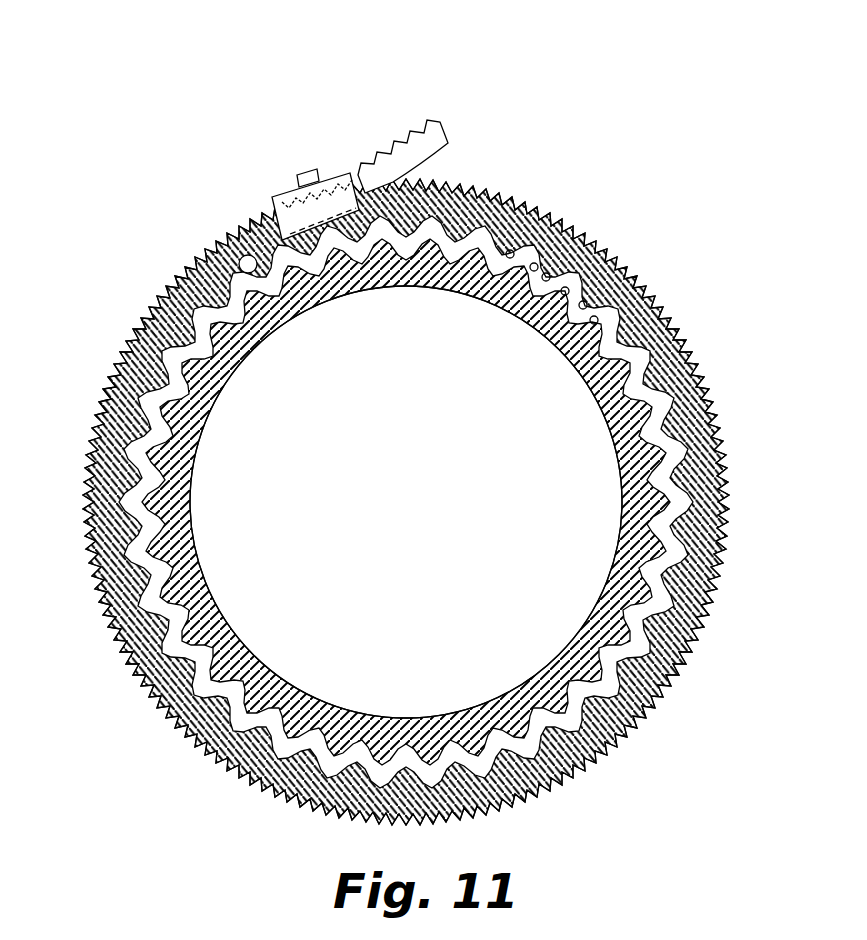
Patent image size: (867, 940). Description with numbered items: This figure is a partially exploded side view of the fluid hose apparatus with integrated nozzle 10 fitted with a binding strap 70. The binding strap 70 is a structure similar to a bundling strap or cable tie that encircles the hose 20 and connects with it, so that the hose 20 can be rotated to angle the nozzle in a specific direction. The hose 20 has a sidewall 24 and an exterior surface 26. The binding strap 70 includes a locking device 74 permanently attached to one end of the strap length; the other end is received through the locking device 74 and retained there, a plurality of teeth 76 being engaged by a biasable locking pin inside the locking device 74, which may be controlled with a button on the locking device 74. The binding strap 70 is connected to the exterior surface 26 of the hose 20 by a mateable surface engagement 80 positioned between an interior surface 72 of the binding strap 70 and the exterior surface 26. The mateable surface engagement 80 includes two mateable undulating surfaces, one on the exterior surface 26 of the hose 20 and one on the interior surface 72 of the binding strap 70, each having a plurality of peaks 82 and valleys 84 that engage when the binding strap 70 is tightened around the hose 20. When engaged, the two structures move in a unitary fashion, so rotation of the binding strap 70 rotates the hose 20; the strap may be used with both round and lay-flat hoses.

The fluid hose apparatus with integrated nozzle 10 is at (604, 104).
The hose 20 is at (416, 512).
The sidewall 24 is at (727, 517).
The exterior surface 26 is at (612, 350).
The binding strap 70 is at (712, 417).
The interior surface 72 is at (240, 236).
The locking device 74 is at (293, 184).
The teeth 76 is at (370, 155).
The mateable surface engagement 80 is at (594, 307).
The peaks 82 is at (550, 222).
The valleys 84 is at (588, 252).